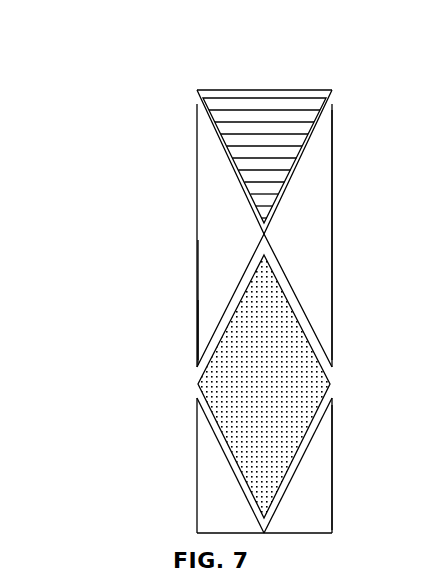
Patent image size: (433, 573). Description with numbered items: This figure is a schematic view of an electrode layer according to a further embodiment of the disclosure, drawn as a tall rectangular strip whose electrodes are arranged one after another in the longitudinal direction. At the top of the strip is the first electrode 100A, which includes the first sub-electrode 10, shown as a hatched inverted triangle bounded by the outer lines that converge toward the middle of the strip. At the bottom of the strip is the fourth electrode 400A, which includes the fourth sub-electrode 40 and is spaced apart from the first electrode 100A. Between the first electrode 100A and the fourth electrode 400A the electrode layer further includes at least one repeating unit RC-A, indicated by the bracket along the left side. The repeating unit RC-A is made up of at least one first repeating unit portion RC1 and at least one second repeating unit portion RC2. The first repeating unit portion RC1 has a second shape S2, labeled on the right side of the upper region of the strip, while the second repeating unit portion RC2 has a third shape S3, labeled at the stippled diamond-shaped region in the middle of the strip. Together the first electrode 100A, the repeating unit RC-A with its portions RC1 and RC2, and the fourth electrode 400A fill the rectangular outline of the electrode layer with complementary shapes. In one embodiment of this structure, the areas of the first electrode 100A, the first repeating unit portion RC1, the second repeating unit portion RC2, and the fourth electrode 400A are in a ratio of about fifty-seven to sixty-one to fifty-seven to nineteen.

The first electrode 100A is at (264, 86).
The first sub-electrode 10 is at (307, 100).
The second shape S2 is at (319, 213).
The first repeating unit portion RC1 is at (196, 193).
The repeating unit RC-A is at (116, 193).
The third shape S3 is at (316, 400).
The second repeating unit portion RC2 is at (197, 386).
The fourth electrode 400A is at (196, 478).
The fourth sub-electrode 40 is at (312, 510).